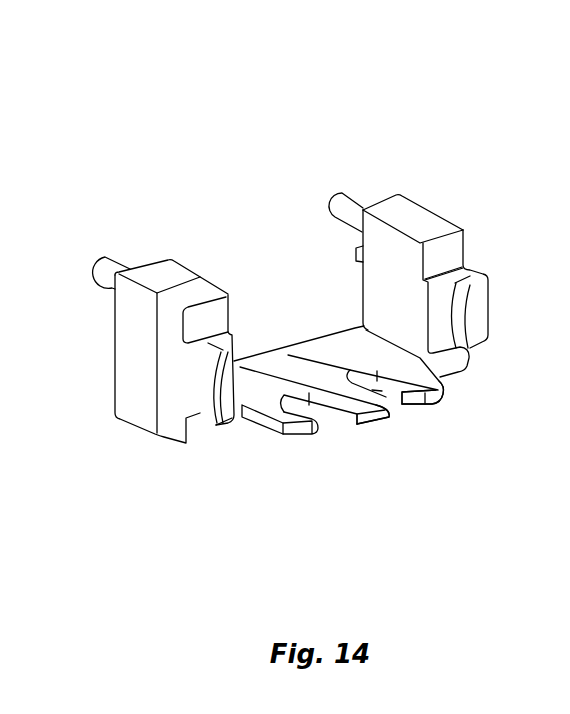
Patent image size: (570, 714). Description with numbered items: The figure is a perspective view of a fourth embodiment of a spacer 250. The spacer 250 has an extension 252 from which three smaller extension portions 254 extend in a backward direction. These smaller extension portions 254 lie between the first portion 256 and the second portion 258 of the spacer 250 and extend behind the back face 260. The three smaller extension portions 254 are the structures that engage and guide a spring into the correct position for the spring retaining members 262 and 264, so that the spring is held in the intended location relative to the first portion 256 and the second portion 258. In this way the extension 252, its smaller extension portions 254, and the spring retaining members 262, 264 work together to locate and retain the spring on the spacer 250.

The spacer 250 is at (383, 121).
The extension 252 is at (300, 343).
The smaller extension portions 254 is at (297, 440).
The first portion 256 is at (118, 358).
The second portion 258 is at (470, 253).
The back face 260 is at (450, 247).
The spring retaining member 262 is at (203, 415).
The spring retaining member 264 is at (485, 328).